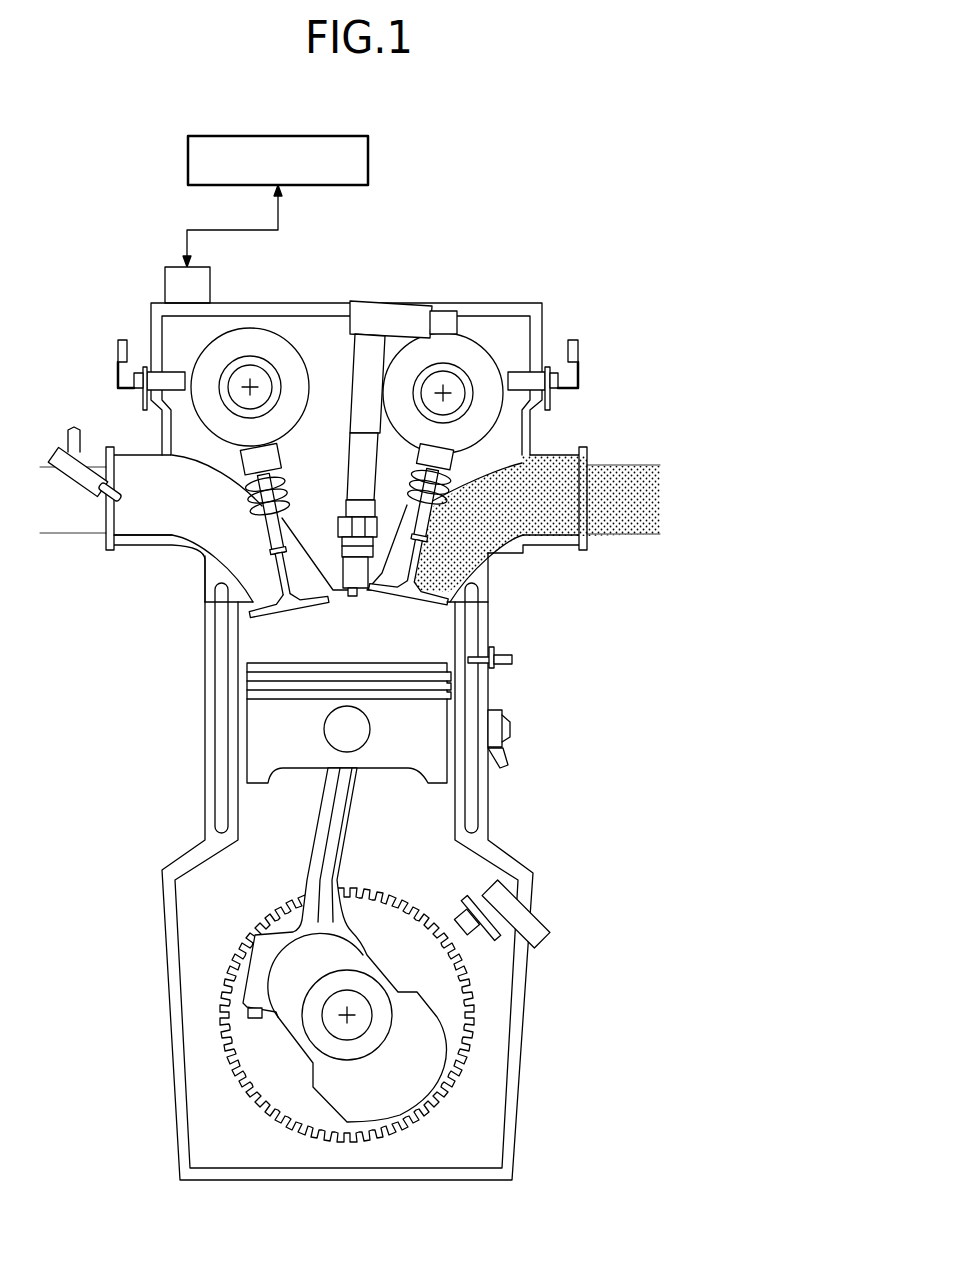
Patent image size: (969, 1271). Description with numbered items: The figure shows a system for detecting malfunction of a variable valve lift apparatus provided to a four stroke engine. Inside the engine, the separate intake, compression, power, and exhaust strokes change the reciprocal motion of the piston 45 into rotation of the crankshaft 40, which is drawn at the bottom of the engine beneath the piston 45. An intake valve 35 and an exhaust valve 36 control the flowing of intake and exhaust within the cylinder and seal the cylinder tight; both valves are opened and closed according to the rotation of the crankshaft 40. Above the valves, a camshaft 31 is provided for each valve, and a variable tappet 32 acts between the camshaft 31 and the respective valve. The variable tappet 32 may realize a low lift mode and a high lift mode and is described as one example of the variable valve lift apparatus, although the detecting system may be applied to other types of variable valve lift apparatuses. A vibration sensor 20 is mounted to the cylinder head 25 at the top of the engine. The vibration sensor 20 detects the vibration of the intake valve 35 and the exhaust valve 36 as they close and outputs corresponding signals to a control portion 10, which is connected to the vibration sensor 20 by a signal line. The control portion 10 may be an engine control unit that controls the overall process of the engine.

The control portion 10 is at (368, 160).
The vibration sensor 20 is at (172, 267).
The cylinder head 25 is at (150, 322).
The camshaft 31 is at (250, 357).
The variable tappet 32 is at (222, 465).
The intake valve 35 is at (275, 617).
The exhaust valve 36 is at (427, 620).
The crankshaft 40 is at (372, 1015).
The piston 45 is at (423, 732).